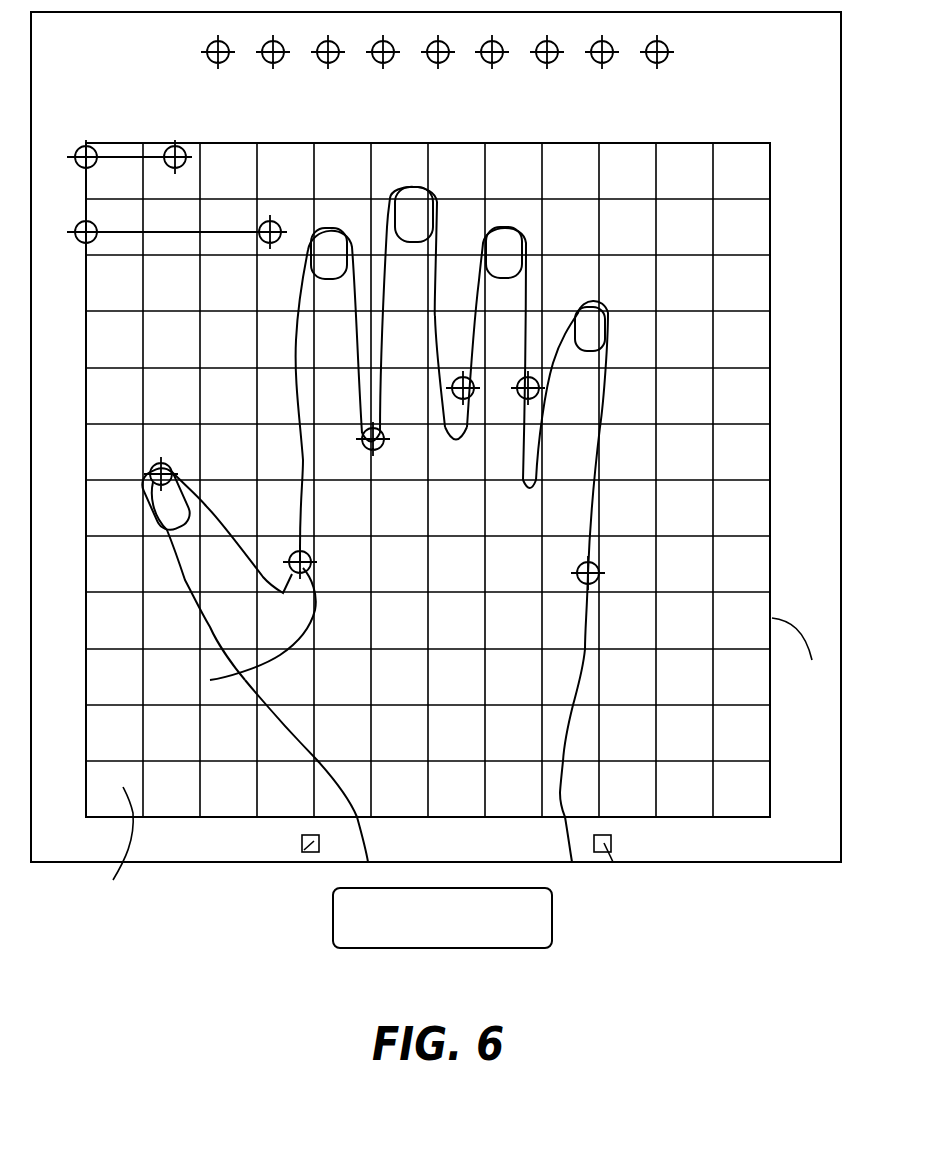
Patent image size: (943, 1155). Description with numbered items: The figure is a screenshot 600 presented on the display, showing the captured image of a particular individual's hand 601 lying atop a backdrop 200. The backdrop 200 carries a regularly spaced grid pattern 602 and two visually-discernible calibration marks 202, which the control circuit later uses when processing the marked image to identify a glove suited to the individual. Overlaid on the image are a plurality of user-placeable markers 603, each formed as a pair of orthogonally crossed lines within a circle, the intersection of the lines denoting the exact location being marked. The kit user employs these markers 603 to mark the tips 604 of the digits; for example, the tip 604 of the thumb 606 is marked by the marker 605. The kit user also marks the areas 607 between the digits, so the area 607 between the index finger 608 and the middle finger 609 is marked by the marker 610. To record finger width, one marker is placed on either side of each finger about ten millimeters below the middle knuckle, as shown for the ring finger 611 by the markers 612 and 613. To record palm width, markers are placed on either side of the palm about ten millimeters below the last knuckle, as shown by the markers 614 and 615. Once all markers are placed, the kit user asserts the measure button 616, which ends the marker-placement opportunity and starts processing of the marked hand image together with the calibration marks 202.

The backdrop 200 is at (467, 765).
The visually-discernible calibration marks 202 is at (313, 840).
The screenshot 600 is at (463, 997).
The hand 601 is at (520, 657).
The grid pattern 602 is at (658, 684).
The user-placeable markers 603 is at (283, 232).
The tips 604 is at (420, 183).
The user-placeable marker 605 is at (153, 465).
The thumb 606 is at (193, 545).
The areas between the digits 607 is at (525, 481).
The index finger 608 is at (297, 300).
The middle finger 609 is at (413, 258).
The user-placeable marker 610 is at (363, 432).
The ring finger 611 is at (507, 290).
The user-placeable marker 612 is at (455, 372).
The user-placeable marker 613 is at (535, 375).
The user-placeable marker 614 is at (210, 680).
The user-placeable marker 615 is at (592, 570).
The measure button 616 is at (537, 927).